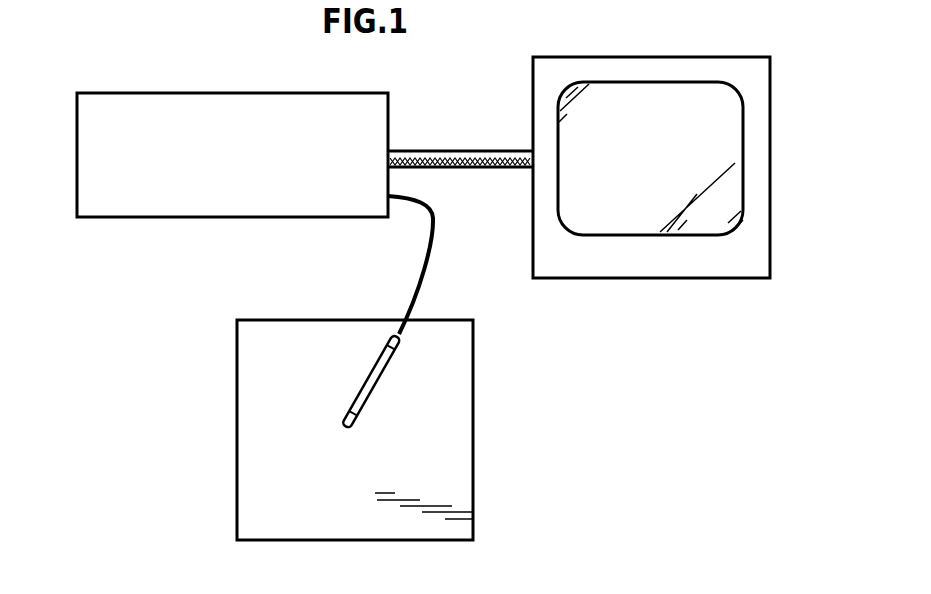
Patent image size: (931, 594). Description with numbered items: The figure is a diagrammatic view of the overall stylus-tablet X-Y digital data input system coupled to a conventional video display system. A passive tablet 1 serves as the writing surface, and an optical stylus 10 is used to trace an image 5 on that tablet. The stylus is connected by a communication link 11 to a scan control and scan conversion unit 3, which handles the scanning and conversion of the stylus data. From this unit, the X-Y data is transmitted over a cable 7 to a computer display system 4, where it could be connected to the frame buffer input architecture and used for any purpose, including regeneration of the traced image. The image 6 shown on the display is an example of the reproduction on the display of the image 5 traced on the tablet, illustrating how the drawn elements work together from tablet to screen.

The passive tablet 1 is at (457, 480).
The scan control and scan conversion unit 3 is at (175, 219).
The computer display system 4 is at (702, 265).
The image traced on the tablet 5 is at (277, 434).
The image regenerated on the display 6 is at (634, 145).
The cable 7 is at (475, 151).
The optical stylus 10 is at (378, 382).
The communication link 11 is at (428, 258).